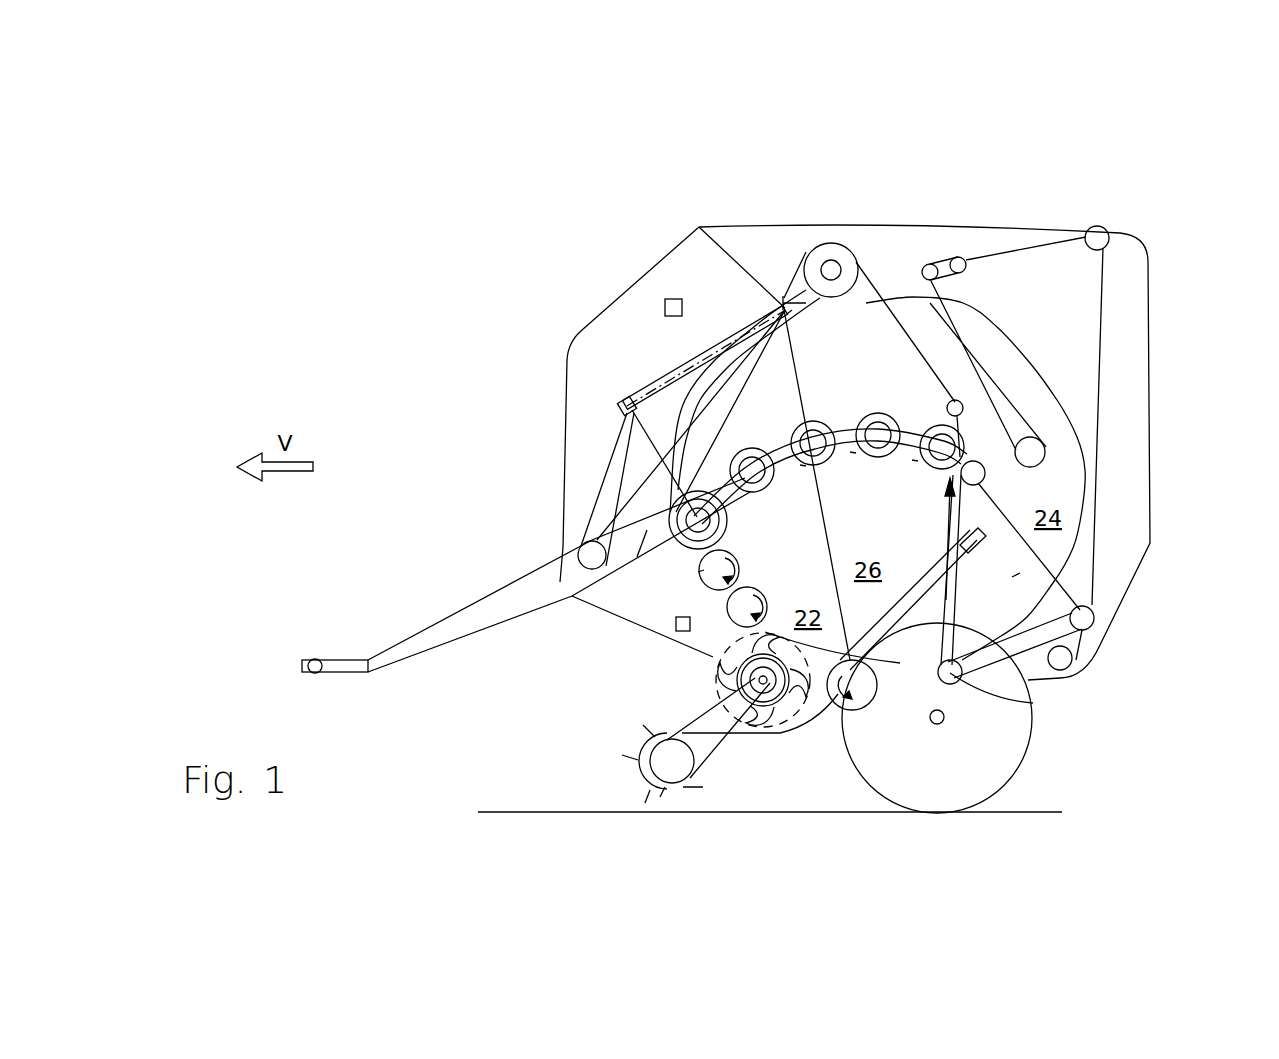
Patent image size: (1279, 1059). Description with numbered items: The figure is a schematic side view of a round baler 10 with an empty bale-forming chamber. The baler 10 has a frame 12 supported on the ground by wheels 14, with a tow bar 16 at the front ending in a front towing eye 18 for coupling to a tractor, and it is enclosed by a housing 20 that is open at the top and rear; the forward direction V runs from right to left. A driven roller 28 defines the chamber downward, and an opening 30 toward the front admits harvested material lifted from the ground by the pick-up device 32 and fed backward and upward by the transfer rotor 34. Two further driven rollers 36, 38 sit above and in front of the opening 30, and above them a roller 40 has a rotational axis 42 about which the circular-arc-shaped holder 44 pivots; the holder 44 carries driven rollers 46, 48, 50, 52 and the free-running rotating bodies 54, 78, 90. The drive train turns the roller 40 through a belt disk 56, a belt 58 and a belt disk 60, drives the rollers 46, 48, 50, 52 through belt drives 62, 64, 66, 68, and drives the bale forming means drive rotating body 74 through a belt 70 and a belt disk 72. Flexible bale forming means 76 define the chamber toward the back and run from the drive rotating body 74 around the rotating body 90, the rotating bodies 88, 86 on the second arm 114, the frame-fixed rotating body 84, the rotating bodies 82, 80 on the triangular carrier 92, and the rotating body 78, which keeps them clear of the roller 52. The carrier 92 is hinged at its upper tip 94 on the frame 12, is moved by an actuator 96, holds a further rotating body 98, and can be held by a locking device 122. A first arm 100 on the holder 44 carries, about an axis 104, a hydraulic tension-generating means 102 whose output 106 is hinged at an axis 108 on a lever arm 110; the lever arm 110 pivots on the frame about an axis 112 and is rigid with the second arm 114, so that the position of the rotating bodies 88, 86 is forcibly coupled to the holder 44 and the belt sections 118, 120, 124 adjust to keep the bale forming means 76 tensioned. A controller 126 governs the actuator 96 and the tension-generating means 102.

The baler 10 is at (430, 198).
The frame 12 is at (678, 600).
The wheels 14 is at (1010, 757).
The tow bar 16 is at (496, 604).
The front towing eye 18 is at (333, 663).
The housing 20 is at (745, 226).
The roller 28 is at (857, 697).
The opening 30 is at (817, 665).
The pick-up device 32 is at (667, 778).
The transfer rotor 34 is at (766, 735).
The roller 36 is at (732, 620).
The roller 38 is at (698, 572).
The roller 40 is at (577, 595).
The rotational axis 42 is at (637, 557).
The holder 44 is at (846, 430).
The roller 46 is at (763, 483).
The roller 48 is at (827, 453).
The roller 50 is at (887, 440).
The roller 52 is at (930, 477).
The rotating body 54 is at (1045, 482).
The belt disk 56 is at (592, 555).
The belt 58 is at (633, 513).
The belt disk 60 is at (737, 540).
The belt drive 62 is at (728, 512).
The belt drive 64 is at (810, 463).
The belt drive 66 is at (853, 453).
The belt drive 68 is at (915, 463).
The belt 70 is at (622, 487).
The belt disk 72 is at (846, 258).
The bale forming means drive rotating body 74 is at (831, 262).
The bale forming means 76 is at (943, 610).
The rotating body 78 is at (960, 400).
The rotating body 80 is at (1033, 703).
The rotating body 82 is at (1095, 618).
The rotating body 84 is at (1109, 238).
The rotating body 86 is at (962, 258).
The rotating body 88 is at (931, 264).
The rotating body 90 is at (1088, 425).
The carrier 92 is at (1020, 573).
The upper tip 94 is at (985, 474).
The actuator 96 is at (967, 547).
The rotating body 98 is at (1073, 658).
The first arm 100 is at (630, 444).
The tension-generating means 102 is at (687, 370).
The axis 104 is at (620, 403).
The output 106 is at (699, 227).
The axis 108 is at (790, 312).
The lever arm 110 is at (783, 300).
The axis 112 is at (706, 392).
The second arm 114 is at (877, 343).
The belt section 118 is at (862, 303).
The belt section 120 is at (980, 360).
The locking device 122 is at (665, 306).
The belt section 124 is at (1027, 243).
The controller 126 is at (676, 622).